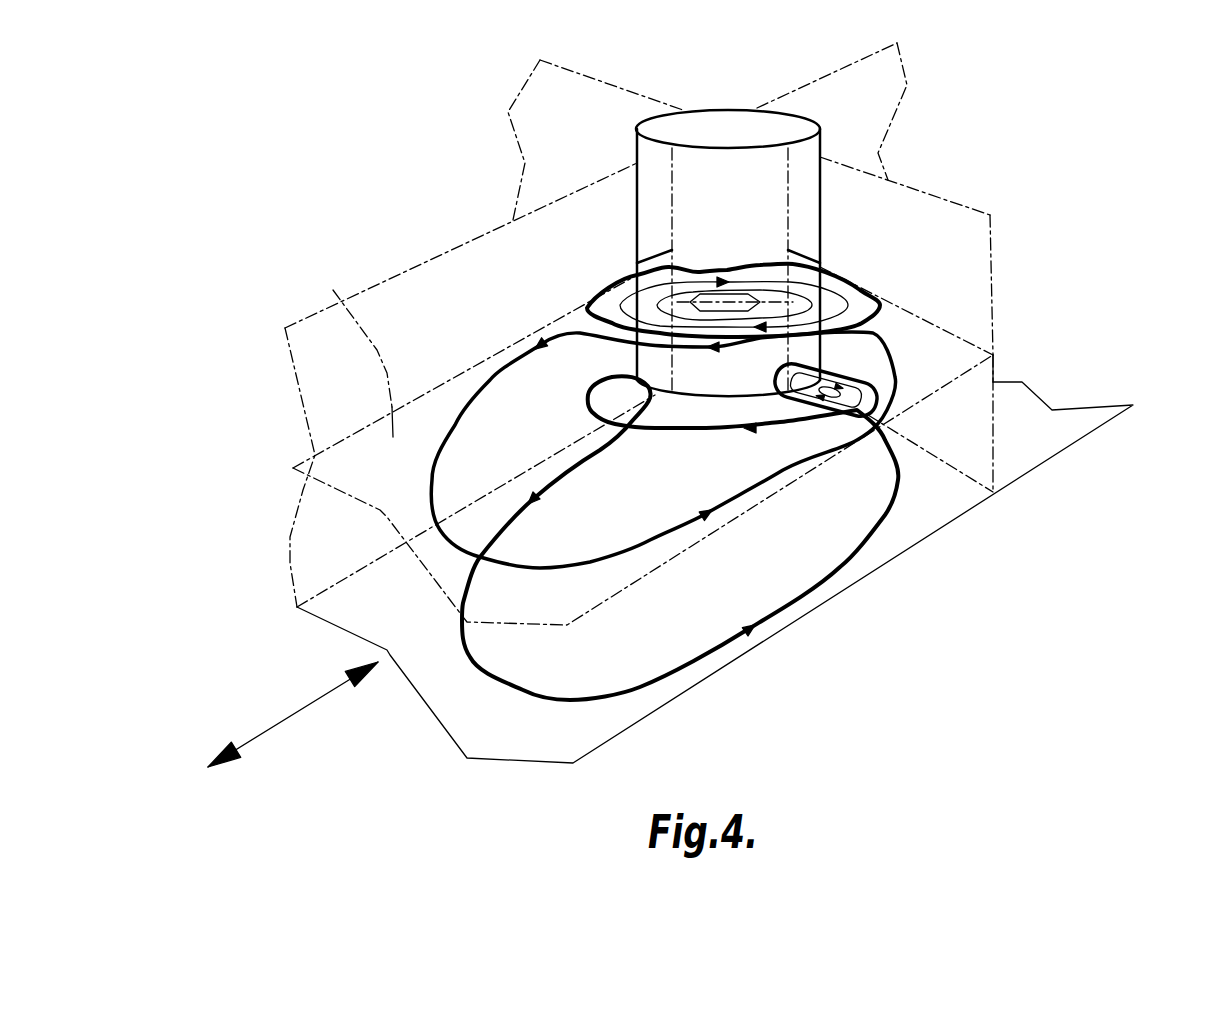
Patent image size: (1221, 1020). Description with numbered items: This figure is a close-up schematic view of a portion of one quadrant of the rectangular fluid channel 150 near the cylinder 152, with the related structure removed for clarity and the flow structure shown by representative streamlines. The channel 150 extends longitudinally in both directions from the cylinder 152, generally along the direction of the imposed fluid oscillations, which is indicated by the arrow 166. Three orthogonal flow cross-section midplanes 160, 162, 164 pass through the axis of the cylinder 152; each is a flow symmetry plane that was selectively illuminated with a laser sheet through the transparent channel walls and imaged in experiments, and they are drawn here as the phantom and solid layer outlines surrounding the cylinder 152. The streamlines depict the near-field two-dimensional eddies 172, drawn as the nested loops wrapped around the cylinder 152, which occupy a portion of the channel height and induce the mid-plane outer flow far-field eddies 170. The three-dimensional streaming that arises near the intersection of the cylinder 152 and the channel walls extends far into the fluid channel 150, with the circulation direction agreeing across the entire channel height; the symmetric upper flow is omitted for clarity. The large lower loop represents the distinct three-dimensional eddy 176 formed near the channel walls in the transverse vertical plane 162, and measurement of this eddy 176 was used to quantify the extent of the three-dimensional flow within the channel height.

The fluid channel 150 is at (1097, 157).
The cylinder 152 is at (740, 125).
The flow cross-section midplane 160 is at (335, 283).
The transverse vertical plane 162 is at (977, 327).
The flow cross-section midplane 164 is at (440, 273).
The arrow 166 is at (283, 718).
The outer flow far-field eddies 170 is at (848, 372).
The near-field 2-D eddies 172 is at (840, 277).
The 3-D eddy 176 is at (835, 567).